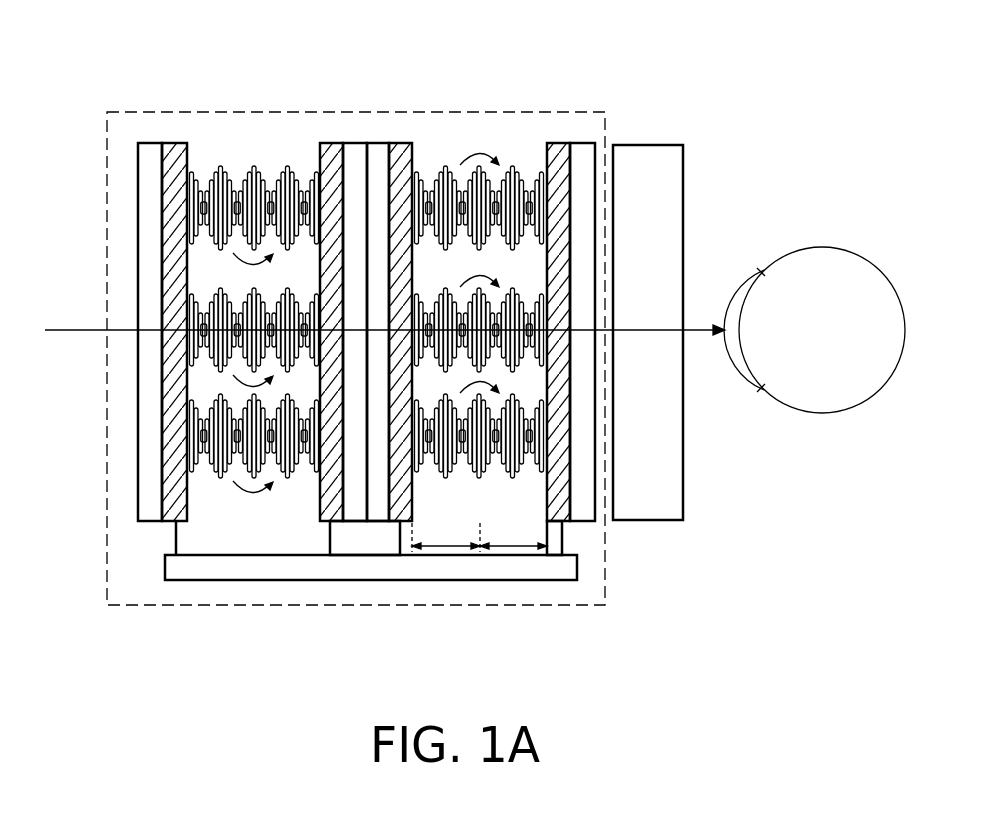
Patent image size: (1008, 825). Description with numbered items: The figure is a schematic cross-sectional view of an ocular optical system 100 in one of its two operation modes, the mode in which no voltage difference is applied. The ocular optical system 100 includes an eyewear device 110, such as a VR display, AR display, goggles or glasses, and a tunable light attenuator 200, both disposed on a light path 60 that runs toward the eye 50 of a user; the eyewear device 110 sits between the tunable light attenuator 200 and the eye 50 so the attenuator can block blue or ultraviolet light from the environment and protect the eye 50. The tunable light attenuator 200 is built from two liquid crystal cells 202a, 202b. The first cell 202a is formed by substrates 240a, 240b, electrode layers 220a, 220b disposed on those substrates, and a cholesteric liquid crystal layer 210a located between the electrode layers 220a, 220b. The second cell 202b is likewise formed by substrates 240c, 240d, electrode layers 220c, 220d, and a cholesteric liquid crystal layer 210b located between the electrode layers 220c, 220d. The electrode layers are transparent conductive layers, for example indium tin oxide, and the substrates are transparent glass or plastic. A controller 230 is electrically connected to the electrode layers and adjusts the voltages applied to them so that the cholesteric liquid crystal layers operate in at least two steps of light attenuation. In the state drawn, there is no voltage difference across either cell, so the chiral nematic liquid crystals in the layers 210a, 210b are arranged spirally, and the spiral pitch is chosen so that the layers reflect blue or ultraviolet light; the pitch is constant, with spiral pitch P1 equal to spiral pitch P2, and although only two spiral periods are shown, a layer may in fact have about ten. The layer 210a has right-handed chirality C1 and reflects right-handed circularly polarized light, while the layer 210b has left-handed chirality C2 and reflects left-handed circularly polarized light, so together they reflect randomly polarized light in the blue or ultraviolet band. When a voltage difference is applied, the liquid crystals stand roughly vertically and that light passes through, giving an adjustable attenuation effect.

The ocular optical system 100 is at (704, 564).
The eyewear device 110 is at (670, 178).
The tunable light attenuator 200 is at (107, 537).
The liquid crystal cell 202a is at (203, 144).
The liquid crystal cell 202b is at (441, 144).
The cholesteric liquid crystal layer 210a is at (262, 150).
The cholesteric liquid crystal layer 210b is at (535, 150).
The electrode layer 220a is at (172, 152).
The electrode layer 220b is at (330, 152).
The electrode layer 220c is at (400, 152).
The electrode layer 220d is at (560, 152).
The controller 230 is at (370, 570).
The substrate 240a is at (150, 512).
The substrate 240b is at (352, 512).
The substrate 240c is at (380, 512).
The substrate 240d is at (585, 512).
The eye 50 is at (823, 262).
The light path 60 is at (50, 328).
The right-handed chirality C1 is at (250, 497).
The left-handed chirality C2 is at (483, 150).
The spiral pitch P1 is at (446, 536).
The spiral pitch P2 is at (513, 536).